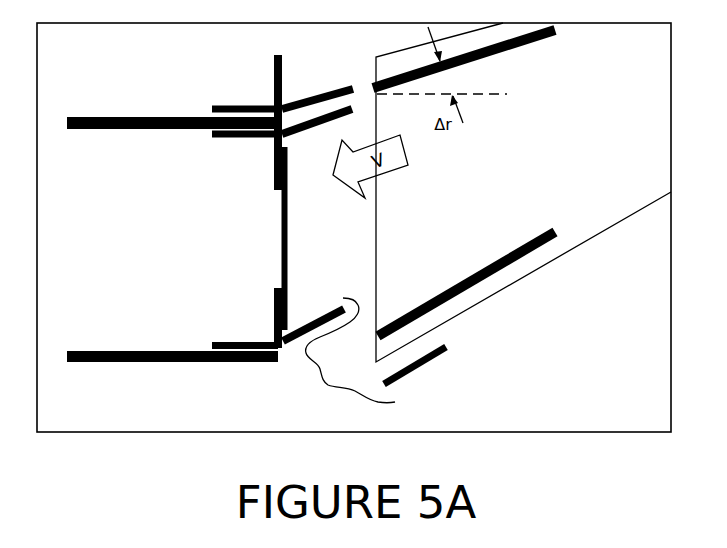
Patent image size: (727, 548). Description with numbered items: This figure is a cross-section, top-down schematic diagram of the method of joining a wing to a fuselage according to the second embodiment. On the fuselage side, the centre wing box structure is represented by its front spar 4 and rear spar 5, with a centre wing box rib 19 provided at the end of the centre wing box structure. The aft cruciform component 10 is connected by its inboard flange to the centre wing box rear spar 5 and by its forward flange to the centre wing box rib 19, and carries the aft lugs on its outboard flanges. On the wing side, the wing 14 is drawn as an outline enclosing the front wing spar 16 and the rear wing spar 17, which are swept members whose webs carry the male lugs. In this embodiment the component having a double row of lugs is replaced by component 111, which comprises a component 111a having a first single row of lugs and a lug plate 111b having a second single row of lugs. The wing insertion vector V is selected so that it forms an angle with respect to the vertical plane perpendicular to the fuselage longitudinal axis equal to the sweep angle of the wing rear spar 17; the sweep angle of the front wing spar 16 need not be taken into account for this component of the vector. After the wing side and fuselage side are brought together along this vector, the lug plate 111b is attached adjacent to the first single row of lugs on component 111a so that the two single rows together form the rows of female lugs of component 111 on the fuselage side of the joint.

The front spar 4 is at (117, 351).
The rear spar 5 is at (102, 129).
The cruciform component 10 is at (340, 125).
The wing body section 14 is at (657, 173).
The front wing spar 16 is at (525, 243).
The rear wing spar 17 is at (533, 44).
The centre wing box rib 19 is at (281, 238).
The component 111 is at (384, 333).
The component 111a is at (323, 308).
The lug plate 111b is at (437, 357).